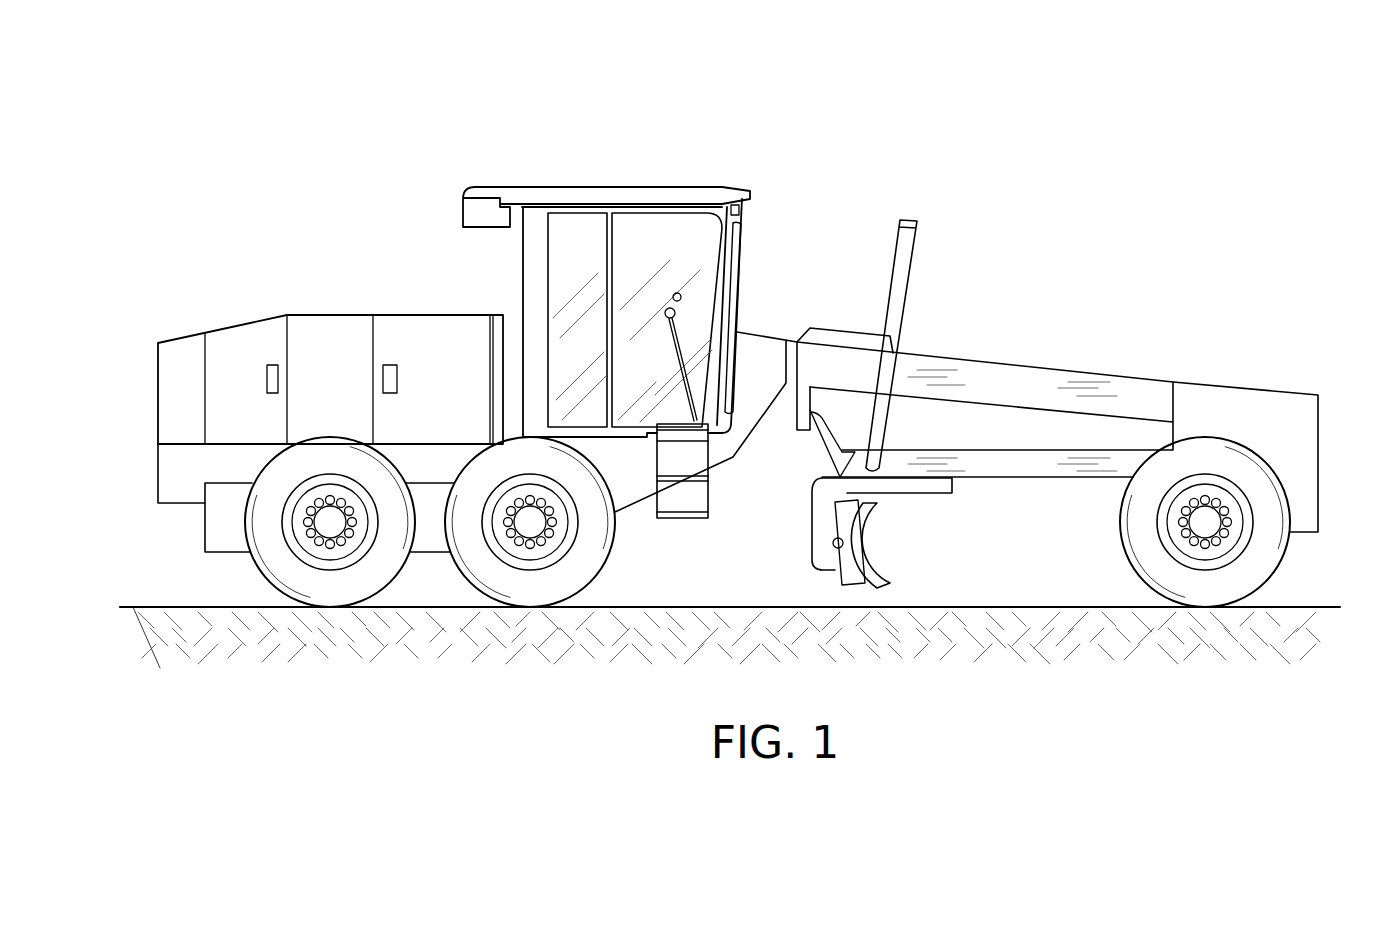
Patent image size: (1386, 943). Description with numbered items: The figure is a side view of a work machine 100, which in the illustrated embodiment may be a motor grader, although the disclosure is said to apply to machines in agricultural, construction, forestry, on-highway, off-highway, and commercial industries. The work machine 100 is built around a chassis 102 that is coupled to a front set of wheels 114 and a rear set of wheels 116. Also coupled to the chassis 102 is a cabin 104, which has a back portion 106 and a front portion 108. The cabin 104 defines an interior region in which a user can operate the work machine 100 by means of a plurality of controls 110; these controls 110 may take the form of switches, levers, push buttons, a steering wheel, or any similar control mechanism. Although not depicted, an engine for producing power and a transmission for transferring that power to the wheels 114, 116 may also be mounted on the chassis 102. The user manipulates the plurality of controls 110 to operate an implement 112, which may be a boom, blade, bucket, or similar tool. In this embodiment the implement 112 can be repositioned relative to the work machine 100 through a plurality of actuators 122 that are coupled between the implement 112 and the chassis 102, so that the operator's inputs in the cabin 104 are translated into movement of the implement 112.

The work machine 100 is at (321, 142).
The chassis 102 is at (645, 490).
The cabin 104 is at (666, 201).
The back portion 106 is at (498, 276).
The front portion 108 is at (762, 241).
The plurality of controls 110 is at (681, 297).
The implement 112 is at (858, 548).
The front set of wheels 114 is at (1263, 567).
The rear set of wheels 116 is at (293, 578).
The plurality of actuators 122 is at (914, 258).